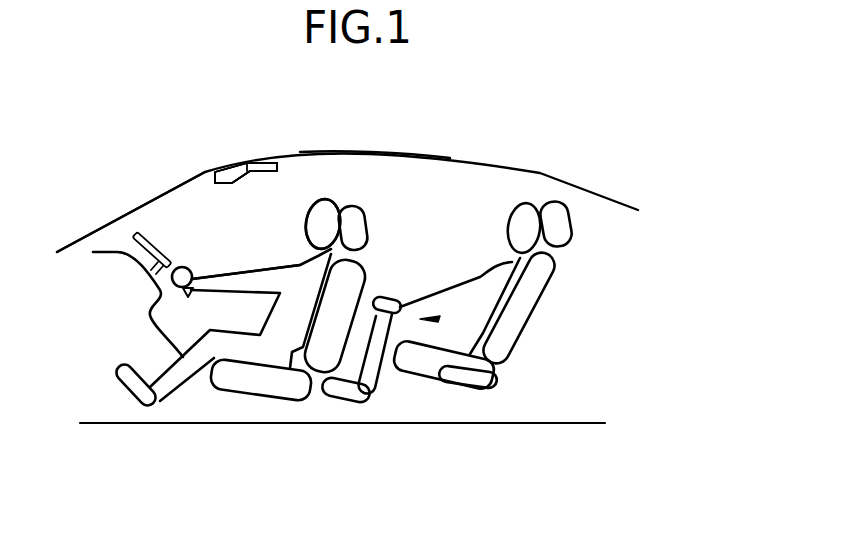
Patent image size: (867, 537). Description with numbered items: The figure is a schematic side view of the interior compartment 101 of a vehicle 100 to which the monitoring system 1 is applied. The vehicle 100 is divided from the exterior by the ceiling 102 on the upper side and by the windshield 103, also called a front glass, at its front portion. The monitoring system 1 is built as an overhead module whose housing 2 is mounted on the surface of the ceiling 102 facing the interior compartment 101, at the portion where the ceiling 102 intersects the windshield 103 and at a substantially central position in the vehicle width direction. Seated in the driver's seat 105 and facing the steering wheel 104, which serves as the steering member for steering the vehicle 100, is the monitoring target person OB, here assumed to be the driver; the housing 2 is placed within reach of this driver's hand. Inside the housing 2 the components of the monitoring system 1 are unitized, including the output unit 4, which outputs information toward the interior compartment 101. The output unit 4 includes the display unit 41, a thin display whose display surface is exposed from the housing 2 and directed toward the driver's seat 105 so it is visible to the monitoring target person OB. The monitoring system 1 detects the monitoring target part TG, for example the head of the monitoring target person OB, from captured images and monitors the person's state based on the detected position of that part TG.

The monitoring system 1 is at (266, 187).
The housing 2 is at (246, 267).
The output unit 4 is at (246, 173).
The display unit 41 is at (240, 172).
The vehicle 100 is at (584, 173).
The interior compartment 101 is at (587, 242).
The ceiling 102 is at (408, 165).
The windshield 103 is at (124, 205).
The steering wheel 104 is at (126, 232).
The driver's seat 105 is at (242, 403).
The monitoring target person OB is at (195, 257).
The monitoring target part TG is at (331, 212).